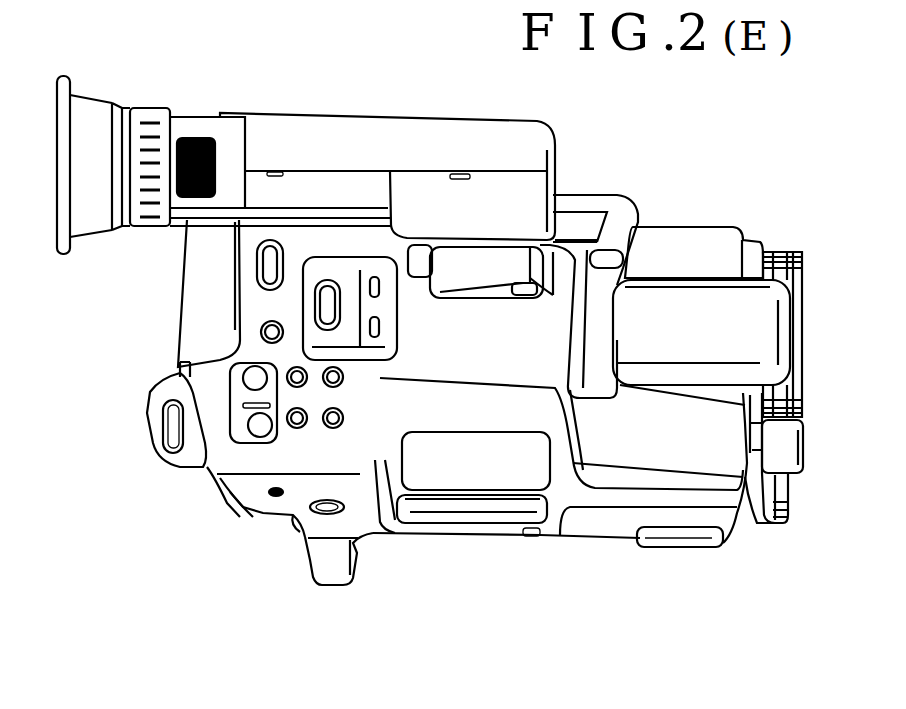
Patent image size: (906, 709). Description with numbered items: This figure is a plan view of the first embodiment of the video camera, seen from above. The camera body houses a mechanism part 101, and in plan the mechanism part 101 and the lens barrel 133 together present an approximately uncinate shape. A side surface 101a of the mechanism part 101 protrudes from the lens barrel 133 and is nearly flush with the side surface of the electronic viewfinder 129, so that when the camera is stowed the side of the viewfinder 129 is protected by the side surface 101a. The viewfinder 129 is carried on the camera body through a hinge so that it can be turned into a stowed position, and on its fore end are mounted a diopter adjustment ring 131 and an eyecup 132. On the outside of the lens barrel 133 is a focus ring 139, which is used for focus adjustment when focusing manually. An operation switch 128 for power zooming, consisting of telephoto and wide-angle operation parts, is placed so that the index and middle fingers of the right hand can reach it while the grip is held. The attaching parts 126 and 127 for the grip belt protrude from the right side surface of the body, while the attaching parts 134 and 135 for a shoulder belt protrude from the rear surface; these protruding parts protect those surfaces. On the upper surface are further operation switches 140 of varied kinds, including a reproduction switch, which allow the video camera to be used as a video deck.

The mechanism part 101 is at (180, 275).
The side surface 101a is at (278, 107).
The attaching part 126 is at (777, 523).
The attaching part 127 is at (332, 567).
The operation switch for power zooming 128 is at (450, 468).
The electronic viewfinder 129 is at (397, 100).
The diopter adjustment ring 131 is at (152, 122).
The eyecup 132 is at (90, 112).
The lens barrel 133 is at (674, 248).
The attaching part 134 is at (167, 457).
The attaching part 135 is at (178, 378).
The focus ring 139 is at (774, 267).
The operation switches 140 is at (243, 378).